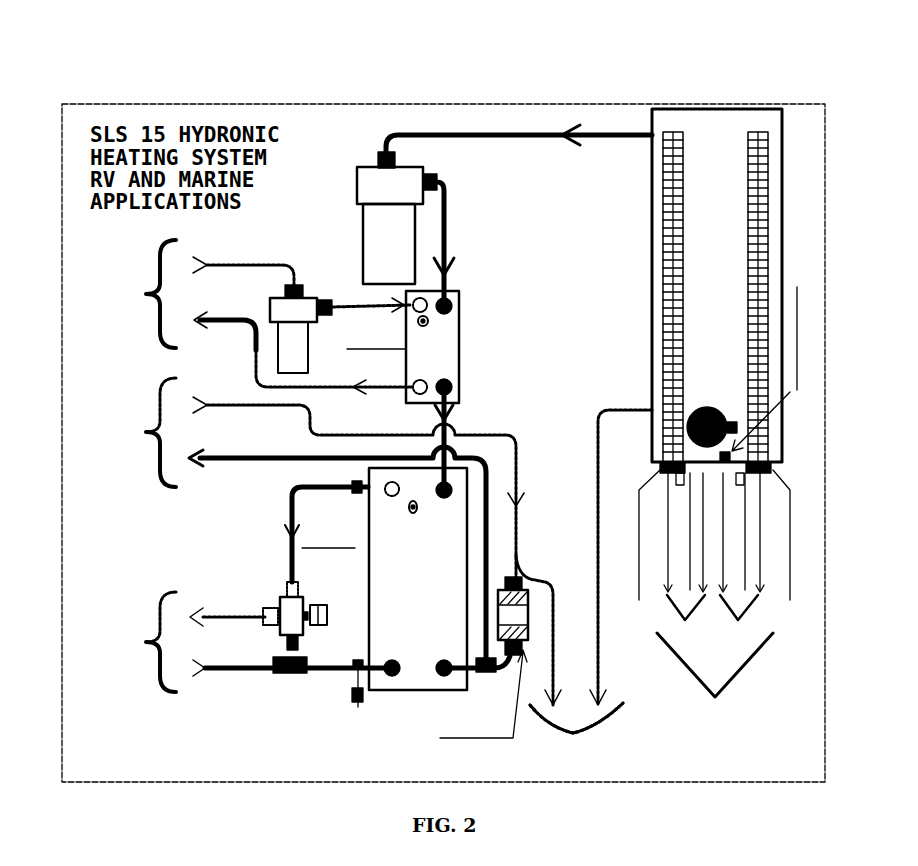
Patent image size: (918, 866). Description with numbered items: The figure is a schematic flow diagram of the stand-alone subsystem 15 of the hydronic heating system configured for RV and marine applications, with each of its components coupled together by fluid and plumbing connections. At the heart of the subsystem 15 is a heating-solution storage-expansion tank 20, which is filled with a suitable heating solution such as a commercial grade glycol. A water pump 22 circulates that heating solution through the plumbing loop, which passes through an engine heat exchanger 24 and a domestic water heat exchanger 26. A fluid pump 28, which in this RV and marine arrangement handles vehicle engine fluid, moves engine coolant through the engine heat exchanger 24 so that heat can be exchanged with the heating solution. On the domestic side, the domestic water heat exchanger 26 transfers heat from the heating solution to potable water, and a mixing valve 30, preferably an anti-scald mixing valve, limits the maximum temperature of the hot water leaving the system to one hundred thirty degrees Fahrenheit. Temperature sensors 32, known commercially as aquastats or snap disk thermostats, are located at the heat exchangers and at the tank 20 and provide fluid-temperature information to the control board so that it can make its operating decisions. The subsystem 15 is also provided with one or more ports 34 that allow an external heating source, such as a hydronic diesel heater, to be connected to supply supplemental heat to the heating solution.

The stand-alone subsystem 15 is at (391, 92).
The heating-solution storage-expansion tank 20 is at (783, 238).
The water pump 22 is at (358, 187).
The engine heat exchanger 24 is at (462, 338).
The domestic water heat exchanger 26 is at (408, 692).
The fluid pump 28 is at (308, 348).
The mixing valve 30 is at (281, 598).
The temperature sensors 32 is at (417, 334).
The port 34 is at (612, 722).